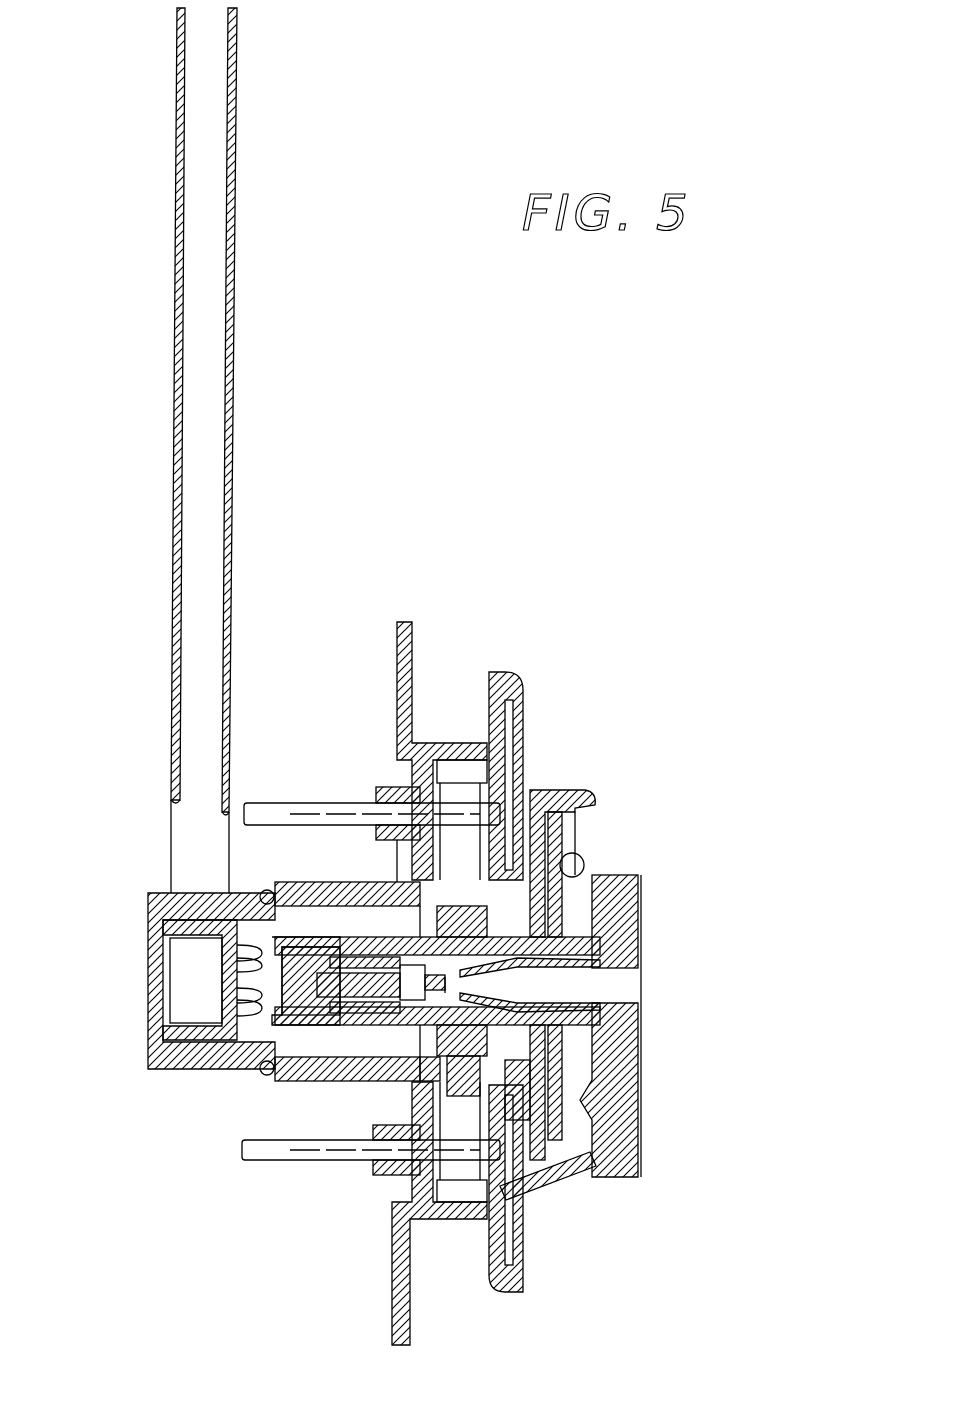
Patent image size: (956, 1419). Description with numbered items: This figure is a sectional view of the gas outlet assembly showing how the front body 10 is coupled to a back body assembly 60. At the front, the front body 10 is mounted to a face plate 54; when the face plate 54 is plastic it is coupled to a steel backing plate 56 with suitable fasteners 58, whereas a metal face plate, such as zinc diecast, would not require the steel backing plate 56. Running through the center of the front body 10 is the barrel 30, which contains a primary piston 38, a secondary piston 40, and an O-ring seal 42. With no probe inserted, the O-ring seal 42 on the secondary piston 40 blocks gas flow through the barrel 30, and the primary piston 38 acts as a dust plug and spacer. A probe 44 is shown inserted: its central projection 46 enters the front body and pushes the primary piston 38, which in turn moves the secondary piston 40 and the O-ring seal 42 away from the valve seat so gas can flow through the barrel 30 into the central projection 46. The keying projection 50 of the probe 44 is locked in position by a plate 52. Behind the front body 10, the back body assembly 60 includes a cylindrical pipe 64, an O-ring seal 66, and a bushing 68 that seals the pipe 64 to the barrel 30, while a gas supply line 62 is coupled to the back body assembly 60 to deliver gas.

The front body 10 is at (601, 797).
The barrel 30 is at (335, 936).
The primary piston 38 is at (455, 1062).
The secondary piston 40 is at (300, 985).
The O-ring seal 42 is at (355, 940).
The probe 44 is at (649, 1021).
The central projection 46 is at (517, 972).
The keying projection 50 is at (505, 1115).
The plate 52 is at (496, 1118).
The face plate 54 is at (497, 667).
The steel backing plate 56 is at (391, 689).
The fasteners 58 is at (300, 803).
The back body assembly 60 is at (148, 997).
The gas supply line 62 is at (172, 410).
The cylindrical pipe 64 is at (175, 1062).
The O-ring seal 66 is at (265, 1073).
The bushing 68 is at (409, 1064).